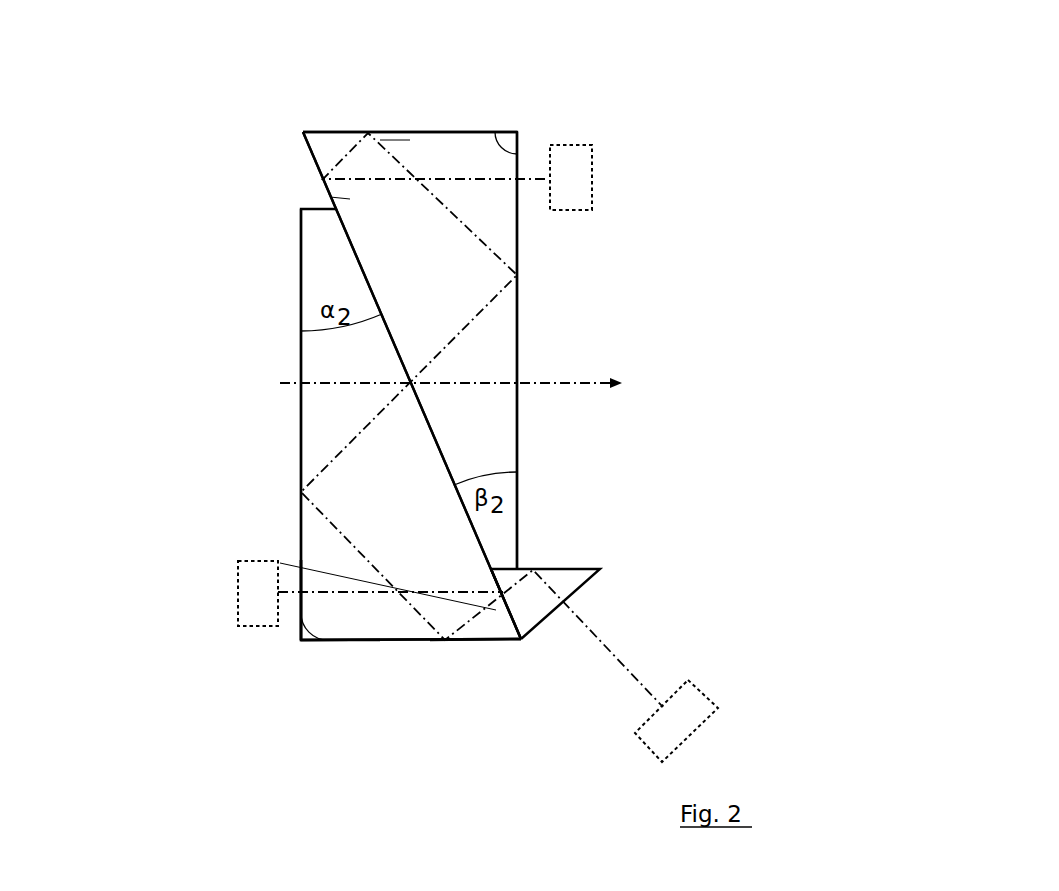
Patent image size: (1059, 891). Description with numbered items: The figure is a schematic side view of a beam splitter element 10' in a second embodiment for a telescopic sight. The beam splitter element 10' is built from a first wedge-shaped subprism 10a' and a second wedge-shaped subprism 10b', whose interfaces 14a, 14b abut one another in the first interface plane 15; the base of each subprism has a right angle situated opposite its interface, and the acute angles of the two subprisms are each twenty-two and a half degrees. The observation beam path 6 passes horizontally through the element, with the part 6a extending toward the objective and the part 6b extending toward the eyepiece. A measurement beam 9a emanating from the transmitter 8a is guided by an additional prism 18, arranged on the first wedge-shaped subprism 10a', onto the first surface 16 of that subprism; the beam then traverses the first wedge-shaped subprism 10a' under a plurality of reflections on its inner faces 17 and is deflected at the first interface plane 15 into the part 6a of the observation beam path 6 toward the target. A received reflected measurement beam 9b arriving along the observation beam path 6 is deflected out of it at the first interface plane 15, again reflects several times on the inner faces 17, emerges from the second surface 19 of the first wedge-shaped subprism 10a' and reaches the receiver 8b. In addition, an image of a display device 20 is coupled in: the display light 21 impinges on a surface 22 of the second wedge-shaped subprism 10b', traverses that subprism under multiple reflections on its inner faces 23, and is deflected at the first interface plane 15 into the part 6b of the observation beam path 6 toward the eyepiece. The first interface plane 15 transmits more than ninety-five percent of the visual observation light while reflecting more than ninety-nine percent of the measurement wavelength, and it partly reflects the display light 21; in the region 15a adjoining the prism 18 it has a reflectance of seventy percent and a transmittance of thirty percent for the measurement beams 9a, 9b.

The beam splitter element 10' is at (516, 328).
The first wedge-shaped subprism 10a' is at (411, 696).
The second wedge-shaped subprism 10b' is at (410, 78).
The display light 21 is at (396, 145).
The inner faces 23 is at (333, 145).
The surface 22 is at (517, 198).
The display device 20 is at (557, 195).
The observation beam path 6 is at (543, 383).
The part of the observation beam path extending toward the objective 6a is at (272, 376).
The part of the observation beam path extending toward the eyepiece 6b is at (621, 375).
The inner faces 17 is at (303, 442).
The interface 14a is at (562, 385).
The interface 14b is at (412, 385).
The first interface plane 15 is at (440, 448).
The region adjoining the prism 15a is at (514, 575).
The prism 18 is at (580, 582).
The first surface 16 is at (508, 608).
The second surface 19 is at (300, 610).
The measurement beam 9a is at (468, 625).
The received reflected measurement beam 9b is at (323, 592).
The transmitter 8a is at (660, 734).
The receiver 8b is at (244, 610).